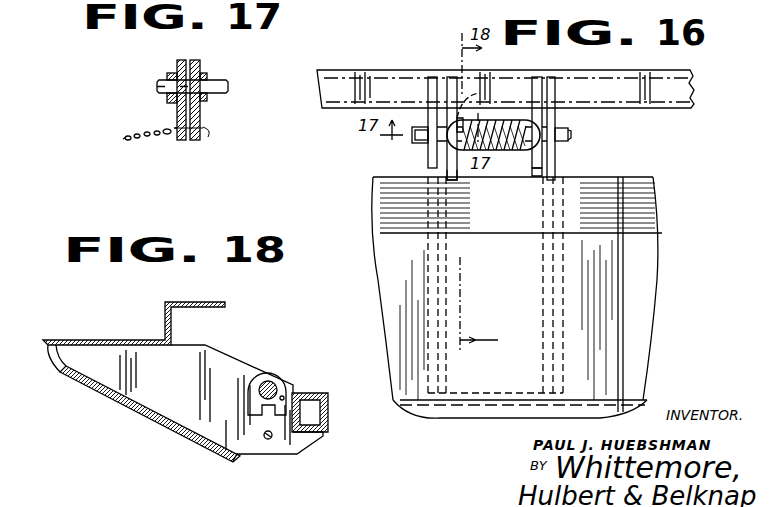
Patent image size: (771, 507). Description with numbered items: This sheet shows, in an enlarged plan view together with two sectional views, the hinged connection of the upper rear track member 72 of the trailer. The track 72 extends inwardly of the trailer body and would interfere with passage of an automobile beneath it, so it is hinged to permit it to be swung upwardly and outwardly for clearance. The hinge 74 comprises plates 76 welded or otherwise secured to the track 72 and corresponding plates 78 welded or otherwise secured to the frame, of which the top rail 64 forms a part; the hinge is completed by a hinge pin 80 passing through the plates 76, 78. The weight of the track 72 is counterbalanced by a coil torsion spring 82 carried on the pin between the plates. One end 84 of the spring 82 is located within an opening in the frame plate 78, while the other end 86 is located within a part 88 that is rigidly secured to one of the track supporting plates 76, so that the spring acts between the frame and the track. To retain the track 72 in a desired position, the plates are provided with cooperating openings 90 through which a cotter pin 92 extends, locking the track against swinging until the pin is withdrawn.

In FIG. 18, the top rail 64 is at (326, 393).
In FIG. 18, the upper rear track member 72 is at (165, 318).
In FIG. 16, the upper rear track member 72 is at (645, 289).
In FIG. 16, the hinge 74 is at (578, 139).
In FIG. 17, the plate 76 is at (199, 57).
In FIG. 18, the plate 76 is at (230, 360).
In FIG. 16, the plate 76 is at (556, 168).
In FIG. 17, the plate 78 is at (173, 103).
In FIG. 16, the plate 78 is at (428, 160).
In FIG. 17, the hinge pin 80 is at (219, 84).
In FIG. 18, the hinge pin 80 is at (277, 385).
In FIG. 16, the hinge pin 80 is at (413, 138).
In FIG. 16, the coil torsion spring 82 is at (500, 149).
In FIG. 16, the end of spring 84 is at (537, 178).
In FIG. 16, the end of spring 86 is at (482, 93).
In FIG. 17, the part 88 is at (203, 97).
In FIG. 18, the part 88 is at (268, 372).
In FIG. 16, the part 88 is at (450, 158).
In FIG. 17, the cooperating openings 90 is at (178, 131).
In FIG. 17, the cotter pin 92 is at (201, 131).
In FIG. 18, the cotter pin 92 is at (268, 440).